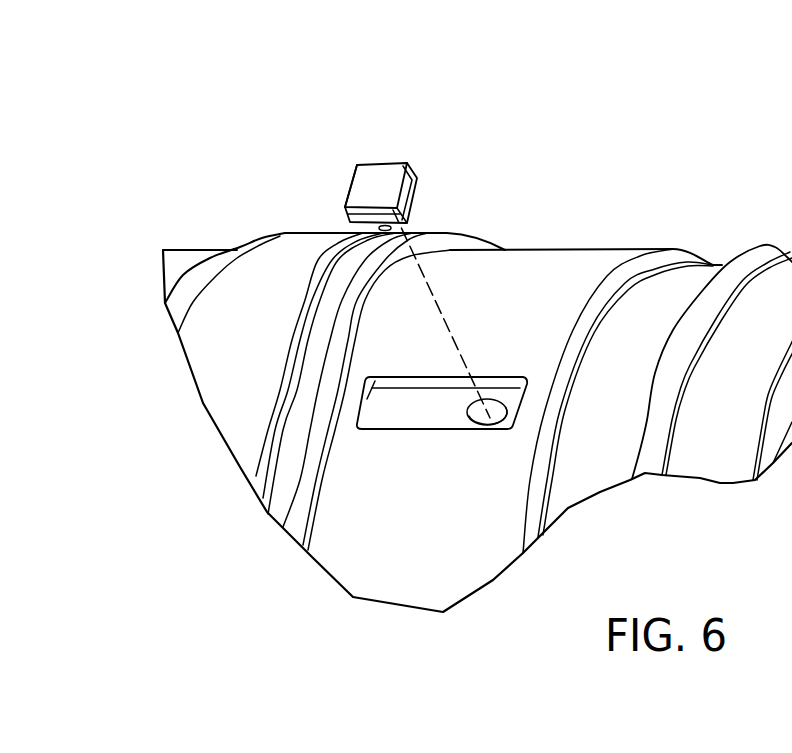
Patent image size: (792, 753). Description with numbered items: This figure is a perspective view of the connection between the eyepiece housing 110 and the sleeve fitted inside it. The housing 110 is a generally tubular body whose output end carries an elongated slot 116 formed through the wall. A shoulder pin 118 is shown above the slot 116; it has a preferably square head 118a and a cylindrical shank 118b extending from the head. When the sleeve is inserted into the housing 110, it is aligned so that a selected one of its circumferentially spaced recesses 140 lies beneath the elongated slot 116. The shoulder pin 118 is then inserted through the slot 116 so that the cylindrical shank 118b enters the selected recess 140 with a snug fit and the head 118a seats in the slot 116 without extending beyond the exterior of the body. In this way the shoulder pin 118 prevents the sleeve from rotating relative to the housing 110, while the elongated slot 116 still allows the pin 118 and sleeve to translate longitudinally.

The housing 110 is at (553, 249).
The elongated slot 116 is at (407, 403).
The shoulder pin 118 is at (403, 219).
The head 118a is at (348, 182).
The cylindrical shank 118b is at (385, 233).
The recess 140 is at (497, 400).